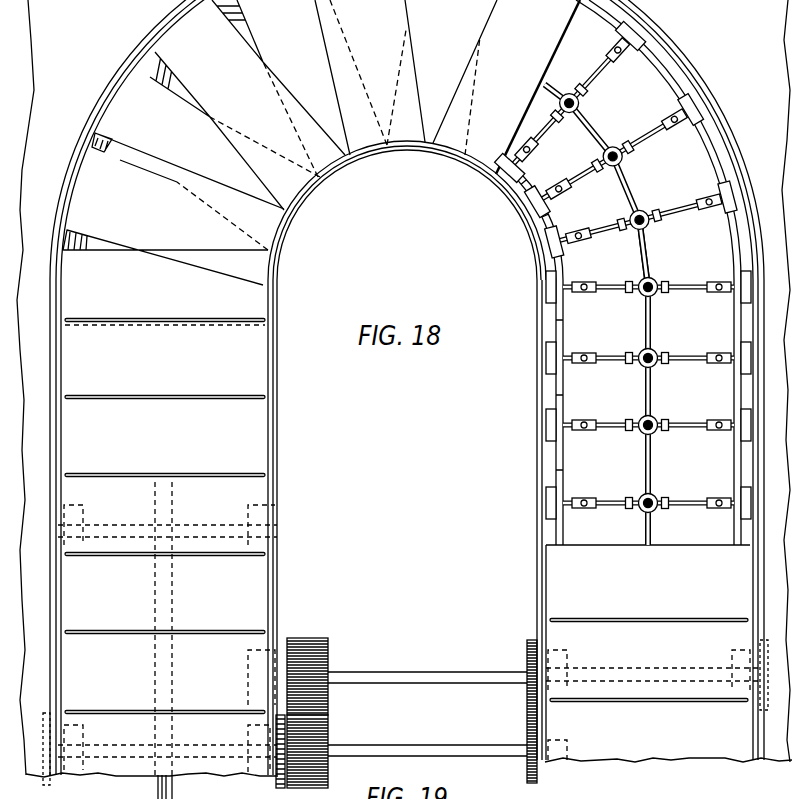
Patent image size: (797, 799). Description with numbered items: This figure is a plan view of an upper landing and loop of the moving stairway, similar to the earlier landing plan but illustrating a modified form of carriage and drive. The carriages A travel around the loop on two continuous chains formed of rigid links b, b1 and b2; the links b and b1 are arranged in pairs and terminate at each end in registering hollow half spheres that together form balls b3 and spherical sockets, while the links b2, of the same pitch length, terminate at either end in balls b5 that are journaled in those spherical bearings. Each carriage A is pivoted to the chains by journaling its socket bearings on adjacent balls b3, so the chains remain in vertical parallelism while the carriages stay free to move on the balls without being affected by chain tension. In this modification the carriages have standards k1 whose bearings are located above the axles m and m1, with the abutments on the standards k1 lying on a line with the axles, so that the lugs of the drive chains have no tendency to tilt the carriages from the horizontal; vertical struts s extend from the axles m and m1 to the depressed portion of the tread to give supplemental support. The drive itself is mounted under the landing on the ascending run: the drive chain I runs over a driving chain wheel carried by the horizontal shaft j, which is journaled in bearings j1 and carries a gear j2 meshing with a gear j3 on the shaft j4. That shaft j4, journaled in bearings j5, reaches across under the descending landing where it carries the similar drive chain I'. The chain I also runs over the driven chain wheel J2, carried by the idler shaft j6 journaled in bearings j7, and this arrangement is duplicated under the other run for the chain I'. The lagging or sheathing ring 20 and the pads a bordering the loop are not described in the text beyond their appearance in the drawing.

The carriage A is at (407, 387).
The inner ring lagging 20 is at (546, 258).
The bearing pads a is at (690, 118).
The vertical strut s is at (586, 283).
The axle m is at (580, 175).
The axle m1 is at (614, 224).
The rigid link b is at (646, 252).
The rigid link b1 is at (643, 250).
The rigid link b2 is at (621, 174).
The ball b3 is at (657, 420).
The ball b5 is at (658, 512).
The standard k1 is at (625, 420).
The drive chain I is at (632, 416).
The drive chain I' is at (175, 787).
The horizontal shaft j is at (472, 671).
The bearing j1 is at (158, 776).
The gear j2 is at (332, 657).
The gear j3 is at (332, 731).
The shaft j4 is at (400, 746).
The bearing j5 is at (259, 768).
The idler shaft j6 is at (694, 502).
The bearing j7 is at (575, 492).
The driven chain wheel J2 is at (666, 496).